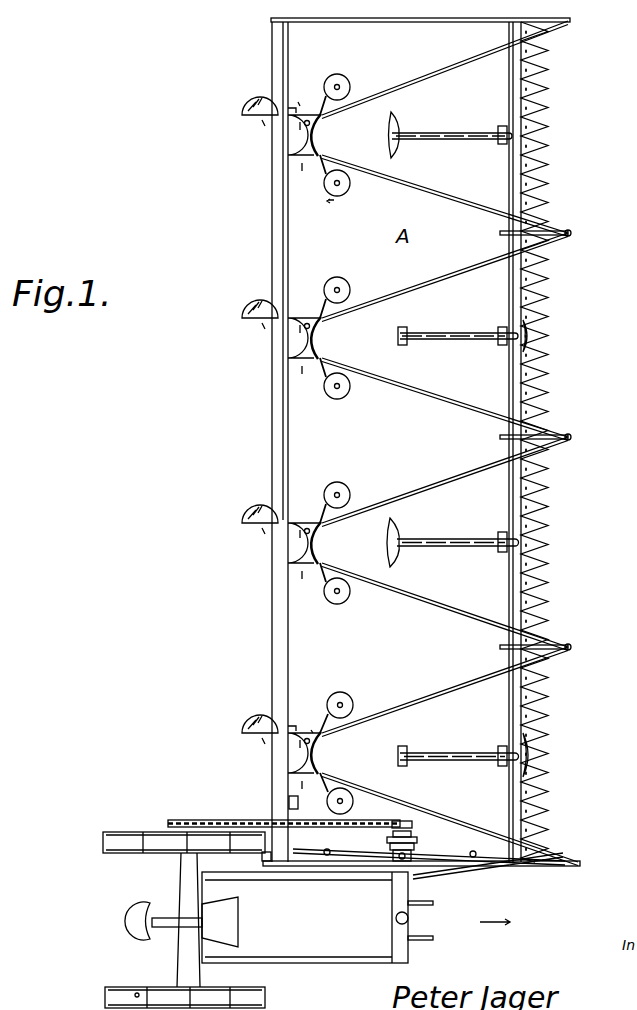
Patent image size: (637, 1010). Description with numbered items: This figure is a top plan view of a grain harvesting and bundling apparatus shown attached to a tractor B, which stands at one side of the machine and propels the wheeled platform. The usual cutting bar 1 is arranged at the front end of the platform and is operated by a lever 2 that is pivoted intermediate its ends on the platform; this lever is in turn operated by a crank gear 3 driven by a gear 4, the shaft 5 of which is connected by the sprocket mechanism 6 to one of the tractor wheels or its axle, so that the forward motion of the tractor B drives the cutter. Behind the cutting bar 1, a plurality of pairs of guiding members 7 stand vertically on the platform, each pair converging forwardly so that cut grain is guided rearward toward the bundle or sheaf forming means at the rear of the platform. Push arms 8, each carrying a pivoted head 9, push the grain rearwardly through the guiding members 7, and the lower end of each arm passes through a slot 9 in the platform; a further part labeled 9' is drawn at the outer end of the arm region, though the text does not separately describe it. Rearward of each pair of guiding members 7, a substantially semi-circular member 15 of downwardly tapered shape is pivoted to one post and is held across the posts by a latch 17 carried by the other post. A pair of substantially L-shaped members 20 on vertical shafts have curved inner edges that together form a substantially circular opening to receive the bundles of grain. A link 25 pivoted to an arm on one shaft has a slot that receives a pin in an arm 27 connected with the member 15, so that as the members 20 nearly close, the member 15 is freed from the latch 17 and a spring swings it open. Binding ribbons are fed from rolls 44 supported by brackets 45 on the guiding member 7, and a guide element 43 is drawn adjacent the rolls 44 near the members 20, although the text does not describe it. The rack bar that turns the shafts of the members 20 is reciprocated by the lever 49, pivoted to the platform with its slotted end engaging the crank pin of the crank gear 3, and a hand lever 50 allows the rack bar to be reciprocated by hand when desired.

The cutting bar 1 is at (546, 115).
The wheels 2 is at (524, 868).
The crank gear 3 is at (420, 853).
The gear 4 is at (414, 838).
The shaft 5 is at (403, 822).
The sprocket mechanism 6 is at (228, 818).
The guiding members 7 is at (423, 73).
The push arms 8 is at (421, 140).
The pivoted head 9 is at (483, 446).
The curved blade 9' is at (485, 434).
The semi-circular member 15 is at (244, 114).
The latch 17 is at (286, 150).
The L-shaped members 20 is at (316, 131).
The link 25 is at (292, 108).
The arm 27 is at (299, 102).
The belt guide 43 is at (323, 172).
The rolls 44 is at (337, 74).
The brackets 45 is at (350, 184).
The lever 49 is at (344, 868).
The hand lever 50 is at (288, 800).
The tractor B is at (108, 938).